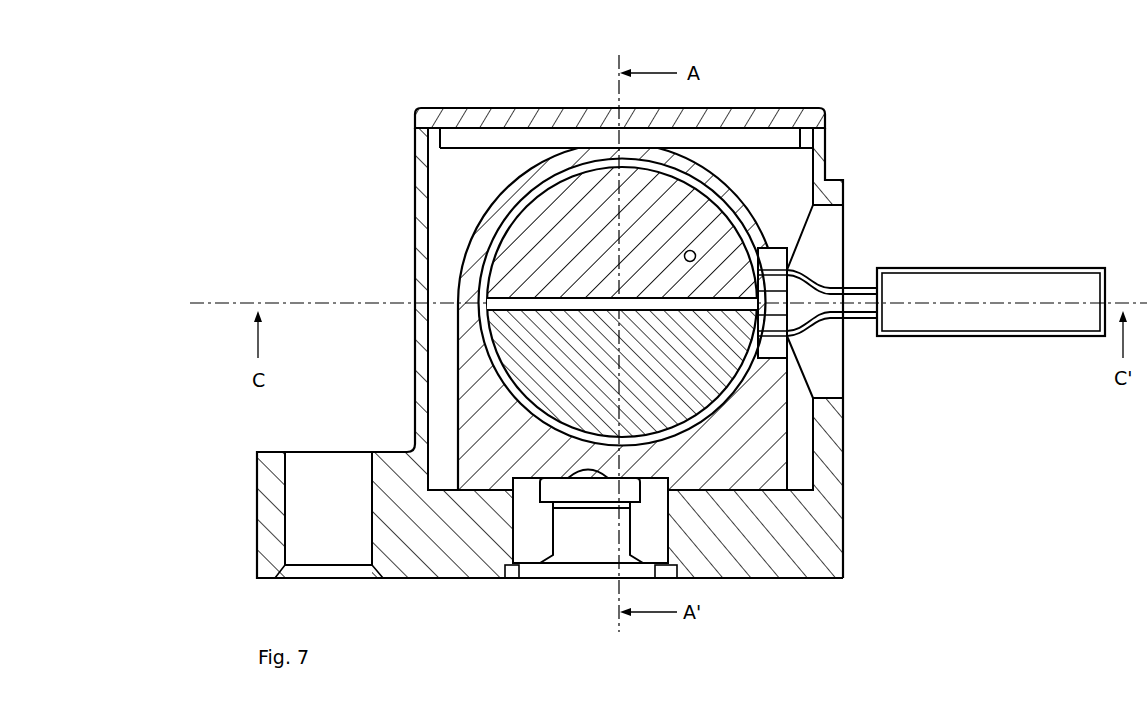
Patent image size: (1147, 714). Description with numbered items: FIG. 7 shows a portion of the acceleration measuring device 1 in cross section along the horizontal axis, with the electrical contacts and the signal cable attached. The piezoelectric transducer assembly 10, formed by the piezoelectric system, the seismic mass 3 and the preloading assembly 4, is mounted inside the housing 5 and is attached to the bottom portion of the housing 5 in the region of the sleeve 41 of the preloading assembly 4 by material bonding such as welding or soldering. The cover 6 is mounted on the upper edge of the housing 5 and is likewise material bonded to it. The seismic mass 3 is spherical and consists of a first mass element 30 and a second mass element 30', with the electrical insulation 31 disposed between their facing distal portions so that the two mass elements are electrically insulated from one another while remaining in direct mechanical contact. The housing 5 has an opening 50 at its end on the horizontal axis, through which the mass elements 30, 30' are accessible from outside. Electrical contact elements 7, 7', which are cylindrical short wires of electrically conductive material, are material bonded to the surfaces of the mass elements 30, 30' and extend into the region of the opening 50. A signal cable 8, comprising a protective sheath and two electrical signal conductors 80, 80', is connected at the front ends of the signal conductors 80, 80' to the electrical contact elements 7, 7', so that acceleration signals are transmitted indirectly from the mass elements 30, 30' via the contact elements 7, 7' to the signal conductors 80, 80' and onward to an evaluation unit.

The acceleration measuring device 1 is at (343, 69).
The piezoelectric transducer assembly 10 is at (691, 353).
The seismic mass 3 is at (310, 146).
The first mass element 30 is at (535, 297).
The electrical insulation 31 is at (683, 258).
The second mass element 30' is at (535, 340).
The preloading assembly 4 is at (770, 447).
The sleeve 41 is at (622, 319).
The housing 5 is at (832, 530).
The cover 6 is at (760, 128).
The opening 50 is at (866, 206).
The electrical contact element 7 is at (841, 277).
The electrical contact element 7' is at (846, 357).
The electrical signal conductor 80 is at (908, 247).
The electrical signal conductor 80' is at (911, 358).
The signal cable 8 is at (1000, 238).